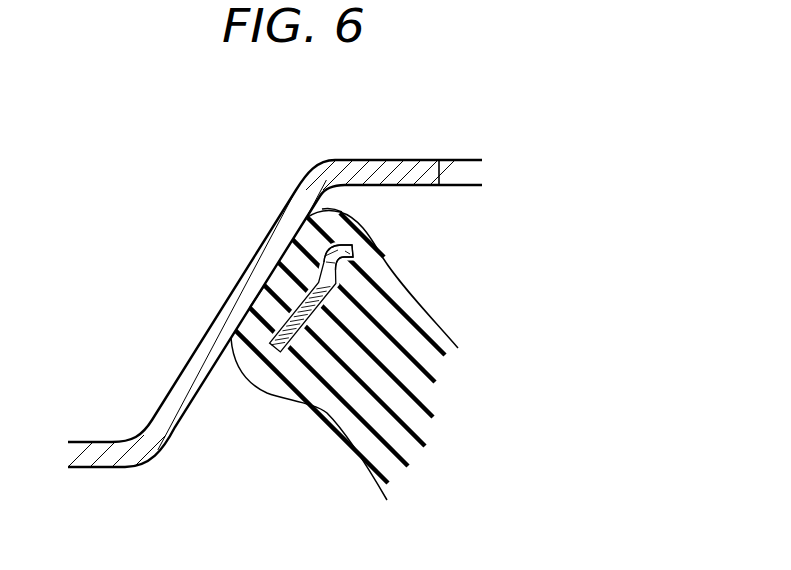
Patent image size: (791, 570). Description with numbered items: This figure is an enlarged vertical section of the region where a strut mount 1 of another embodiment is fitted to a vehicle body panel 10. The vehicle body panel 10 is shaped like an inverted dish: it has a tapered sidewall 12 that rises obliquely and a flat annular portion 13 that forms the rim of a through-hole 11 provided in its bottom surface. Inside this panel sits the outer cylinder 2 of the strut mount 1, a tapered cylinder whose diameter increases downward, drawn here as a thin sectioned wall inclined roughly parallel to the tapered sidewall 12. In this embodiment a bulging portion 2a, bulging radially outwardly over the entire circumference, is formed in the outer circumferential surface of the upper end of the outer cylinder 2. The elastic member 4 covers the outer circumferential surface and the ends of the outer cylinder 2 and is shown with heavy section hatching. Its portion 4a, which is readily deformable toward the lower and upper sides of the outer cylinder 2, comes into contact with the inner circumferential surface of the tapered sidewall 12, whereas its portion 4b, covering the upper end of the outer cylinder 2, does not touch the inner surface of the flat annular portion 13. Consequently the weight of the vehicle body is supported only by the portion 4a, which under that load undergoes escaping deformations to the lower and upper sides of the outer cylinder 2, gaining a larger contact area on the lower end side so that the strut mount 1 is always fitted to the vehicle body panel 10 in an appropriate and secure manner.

The strut mount 1 is at (290, 267).
The outer cylinder 2 is at (295, 311).
The bulging portion 2a is at (290, 210).
The elastic member 4 is at (345, 296).
The portion of the elastic member 4a is at (253, 258).
The portion of the elastic member 4b is at (360, 222).
The vehicle body panel 10 is at (93, 432).
The through-hole 11 is at (464, 165).
The tapered sidewall 12 is at (241, 302).
The flat annular portion 13 is at (395, 167).